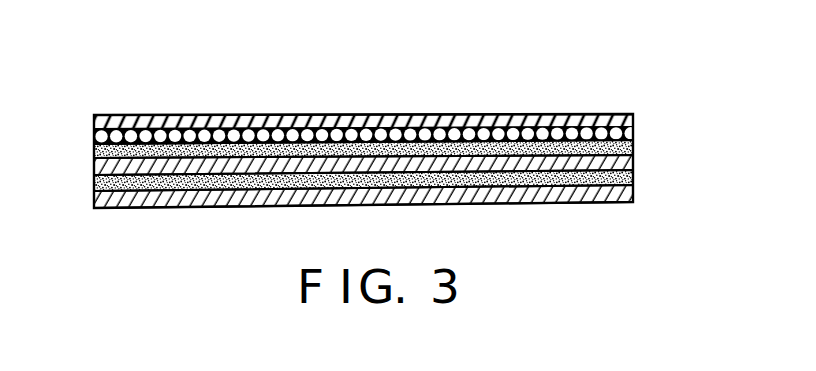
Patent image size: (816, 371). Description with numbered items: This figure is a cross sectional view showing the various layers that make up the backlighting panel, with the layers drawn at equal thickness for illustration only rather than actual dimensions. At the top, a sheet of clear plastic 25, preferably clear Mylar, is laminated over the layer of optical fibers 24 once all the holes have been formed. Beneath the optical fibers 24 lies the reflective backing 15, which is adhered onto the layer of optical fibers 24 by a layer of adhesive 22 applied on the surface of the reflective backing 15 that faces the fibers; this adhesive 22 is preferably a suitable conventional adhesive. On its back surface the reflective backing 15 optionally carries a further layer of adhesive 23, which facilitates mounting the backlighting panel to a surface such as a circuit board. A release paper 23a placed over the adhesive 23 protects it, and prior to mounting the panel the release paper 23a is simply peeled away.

The sheet of clear plastic 25 is at (268, 115).
The layer of optical fibers 24 is at (631, 135).
The layer of adhesive 22 is at (633, 152).
The reflective backing 15 is at (635, 167).
The layer of adhesive 23 is at (618, 180).
The release paper 23a is at (551, 203).